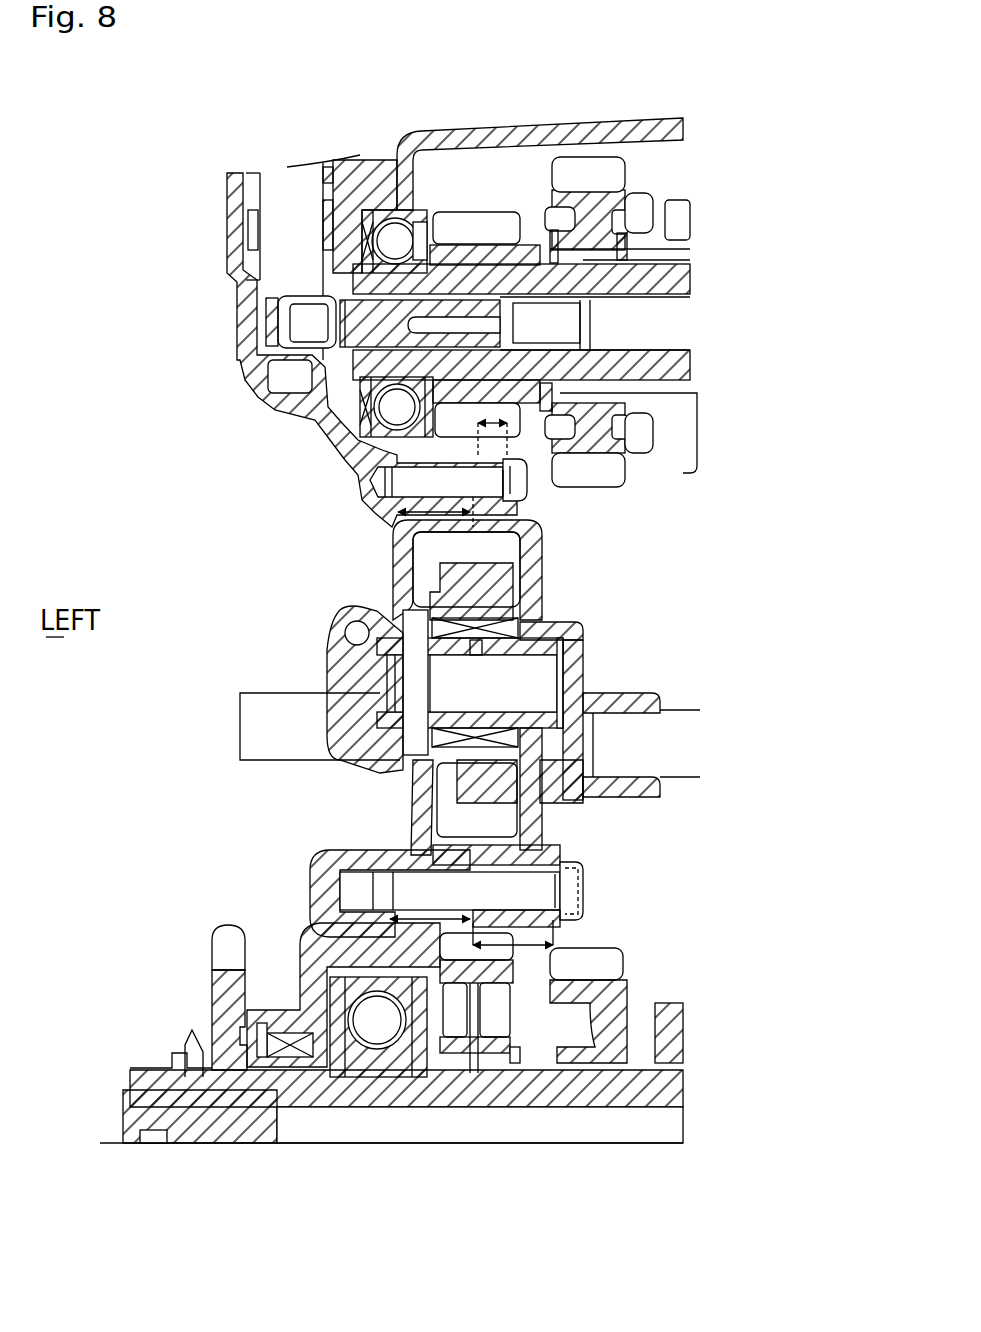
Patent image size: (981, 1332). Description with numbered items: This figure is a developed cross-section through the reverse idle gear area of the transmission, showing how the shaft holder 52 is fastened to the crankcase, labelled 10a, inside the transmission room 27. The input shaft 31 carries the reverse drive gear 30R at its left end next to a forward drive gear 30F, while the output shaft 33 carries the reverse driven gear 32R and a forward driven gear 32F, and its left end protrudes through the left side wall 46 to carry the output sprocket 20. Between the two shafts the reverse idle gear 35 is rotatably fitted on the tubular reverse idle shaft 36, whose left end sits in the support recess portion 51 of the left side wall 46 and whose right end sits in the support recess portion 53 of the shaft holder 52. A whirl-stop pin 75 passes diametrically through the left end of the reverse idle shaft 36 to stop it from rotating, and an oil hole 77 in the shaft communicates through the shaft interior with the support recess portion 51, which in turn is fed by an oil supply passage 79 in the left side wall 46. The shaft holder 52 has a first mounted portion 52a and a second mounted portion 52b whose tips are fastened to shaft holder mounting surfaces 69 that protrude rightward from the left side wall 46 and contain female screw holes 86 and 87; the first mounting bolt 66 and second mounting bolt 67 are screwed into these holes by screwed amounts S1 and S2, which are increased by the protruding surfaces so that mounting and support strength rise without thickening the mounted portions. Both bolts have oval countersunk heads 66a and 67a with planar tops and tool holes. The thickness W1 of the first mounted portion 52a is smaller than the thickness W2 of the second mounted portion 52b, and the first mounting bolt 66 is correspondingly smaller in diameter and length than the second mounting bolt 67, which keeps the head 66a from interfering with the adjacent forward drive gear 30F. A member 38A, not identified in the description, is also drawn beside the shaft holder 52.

The cover (vehicle body frame part) 10a is at (600, 116).
The transmission room 27 is at (522, 157).
The reverse drive gear 30R is at (460, 213).
The input shaft 31 is at (690, 368).
The thickness of the first mounted portion W1 is at (510, 418).
The female screw hole 86 is at (400, 462).
The first mounting bolt 66 is at (415, 483).
The forward drive gear 30F is at (612, 473).
The head of the first mounting bolt 66a is at (507, 508).
The screwed amount of the first mounting bolt S1 is at (407, 520).
The first mounted portion 52a is at (505, 532).
The reverse idle gear 35 is at (453, 547).
The shaft holder mounting surface 69 is at (497, 528).
The reverse idle shaft 36 is at (540, 640).
The oil supply passage 79 is at (353, 632).
The support recess portion of the shaft holder 53 is at (560, 657).
The support recess portion of the left side wall 51 is at (380, 705).
The oil hole 77 is at (480, 655).
The whirl-stop pin 75 is at (407, 750).
The left side wall of the crankcase 46 is at (420, 800).
The shaft holder 52 is at (580, 785).
The tube (38) 38A is at (685, 767).
The female screw hole 87 is at (393, 853).
The second mounted portion 52b is at (553, 837).
The second mounting bolt 67 is at (413, 885).
The head of the second mounting bolt 67a is at (583, 913).
The screwed amount of the second mounting bolt S2 is at (450, 925).
The output sprocket 20 is at (227, 955).
The forward driven gear 32F is at (610, 967).
The thickness of the second mounted portion W2 is at (525, 955).
The reverse driven gear 32R is at (492, 1047).
The output shaft 33 is at (653, 1093).